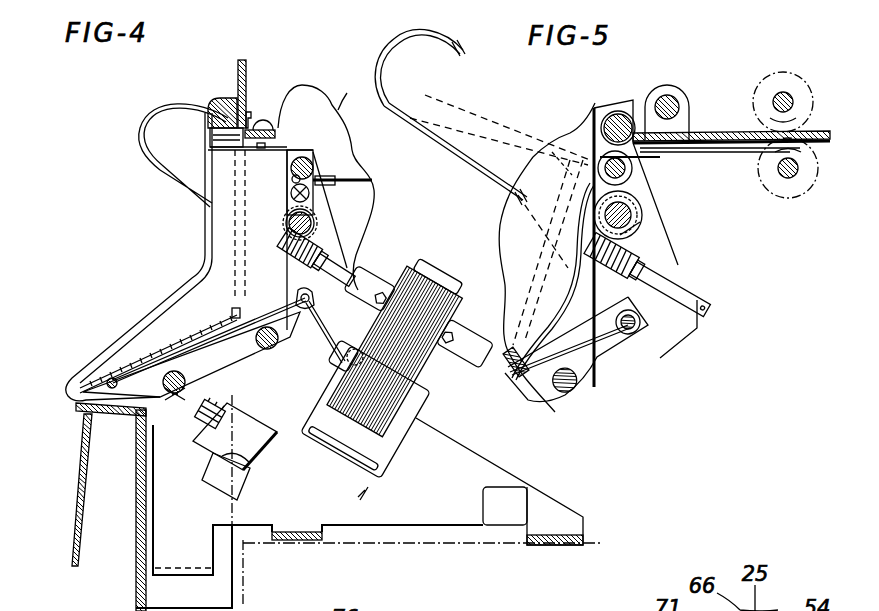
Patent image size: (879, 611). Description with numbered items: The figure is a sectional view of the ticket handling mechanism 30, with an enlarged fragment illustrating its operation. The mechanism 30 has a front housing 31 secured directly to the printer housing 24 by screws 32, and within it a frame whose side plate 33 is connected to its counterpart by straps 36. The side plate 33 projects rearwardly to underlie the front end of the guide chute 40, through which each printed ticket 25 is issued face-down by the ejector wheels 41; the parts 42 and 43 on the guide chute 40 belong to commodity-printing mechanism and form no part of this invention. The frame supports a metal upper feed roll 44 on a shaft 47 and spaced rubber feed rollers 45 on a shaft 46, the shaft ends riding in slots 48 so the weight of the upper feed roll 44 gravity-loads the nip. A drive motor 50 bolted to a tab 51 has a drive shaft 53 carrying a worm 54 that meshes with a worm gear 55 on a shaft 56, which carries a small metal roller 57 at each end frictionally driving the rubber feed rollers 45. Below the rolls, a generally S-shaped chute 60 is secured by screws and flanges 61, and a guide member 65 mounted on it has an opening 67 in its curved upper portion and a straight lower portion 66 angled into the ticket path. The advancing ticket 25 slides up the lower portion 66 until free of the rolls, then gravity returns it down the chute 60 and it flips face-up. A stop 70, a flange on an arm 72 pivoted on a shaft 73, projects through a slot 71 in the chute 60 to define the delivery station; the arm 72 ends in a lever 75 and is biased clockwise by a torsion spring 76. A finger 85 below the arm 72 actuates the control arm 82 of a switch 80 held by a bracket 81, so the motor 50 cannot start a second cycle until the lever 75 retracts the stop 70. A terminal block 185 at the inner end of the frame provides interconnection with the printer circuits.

In FIG. 4, the printer housing 24 is at (240, 60).
In FIG. 4, the ticket 25 is at (336, 172).
In FIG. 5, the ticket 25 is at (723, 147).
In FIG. 4, the mechanism 30 is at (200, 252).
In FIG. 4, the front housing 31 is at (218, 95).
In FIG. 4, the screws 32 is at (250, 112).
In FIG. 4, the left side plate 33 is at (430, 532).
In FIG. 5, the left side plate 33 is at (535, 153).
In FIG. 4, the straps 36 is at (278, 126).
In FIG. 4, the guide chute 40 is at (322, 168).
In FIG. 5, the guide chute 40 is at (712, 131).
In FIG. 5, the ejector wheels 41 is at (783, 78).
In FIG. 5, the part 42 is at (665, 96).
In FIG. 5, the part 43 is at (683, 100).
In FIG. 4, the upper feed roll 44 is at (302, 157).
In FIG. 5, the upper feed roll 44 is at (608, 115).
In FIG. 4, the rubber feed rollers 45 is at (292, 177).
In FIG. 5, the rubber feed rollers 45 is at (640, 162).
In FIG. 5, the shaft 46 is at (635, 180).
In FIG. 5, the shaft 47 is at (590, 113).
In FIG. 5, the slots 48 is at (590, 152).
In FIG. 4, the drive motor 50 is at (440, 280).
In FIG. 4, the tab 51 is at (410, 373).
In FIG. 4, the drive shaft 53 is at (352, 278).
In FIG. 5, the drive shaft 53 is at (716, 304).
In FIG. 4, the worm 54 is at (330, 252).
In FIG. 5, the worm 54 is at (665, 262).
In FIG. 4, the worm gear 55 is at (316, 232).
In FIG. 5, the worm gear 55 is at (650, 240).
In FIG. 4, the shaft 56 is at (312, 206).
In FIG. 5, the shaft 56 is at (640, 210).
In FIG. 4, the small metal roller 57 is at (291, 197).
In FIG. 5, the small metal roller 57 is at (642, 222).
In FIG. 4, the chute 60 is at (157, 350).
In FIG. 5, the chute 60 is at (560, 305).
In FIG. 4, the screws and flanges 61 is at (112, 378).
In FIG. 5, the screws and flanges 61 is at (538, 397).
In FIG. 4, the guide member 65 is at (152, 107).
In FIG. 4, the lower portion 66 is at (192, 178).
In FIG. 4, the opening 67 is at (140, 130).
In FIG. 4, the stop 70 is at (232, 313).
In FIG. 5, the stop 70 is at (505, 315).
In FIG. 5, the slot 71 is at (508, 378).
In FIG. 4, the arm 72 is at (240, 350).
In FIG. 5, the arm 72 is at (540, 393).
In FIG. 4, the shaft 73 is at (314, 302).
In FIG. 5, the shaft 73 is at (648, 335).
In FIG. 4, the lever 75 is at (84, 500).
In FIG. 4, the torsion spring 76 is at (322, 322).
In FIG. 5, the torsion spring 76 is at (610, 365).
In FIG. 4, the switch 80 is at (262, 447).
In FIG. 4, the bracket 81 is at (255, 485).
In FIG. 4, the control arm 82 is at (205, 430).
In FIG. 4, the finger 85 is at (178, 400).
In FIG. 4, the terminal block 185 is at (497, 530).